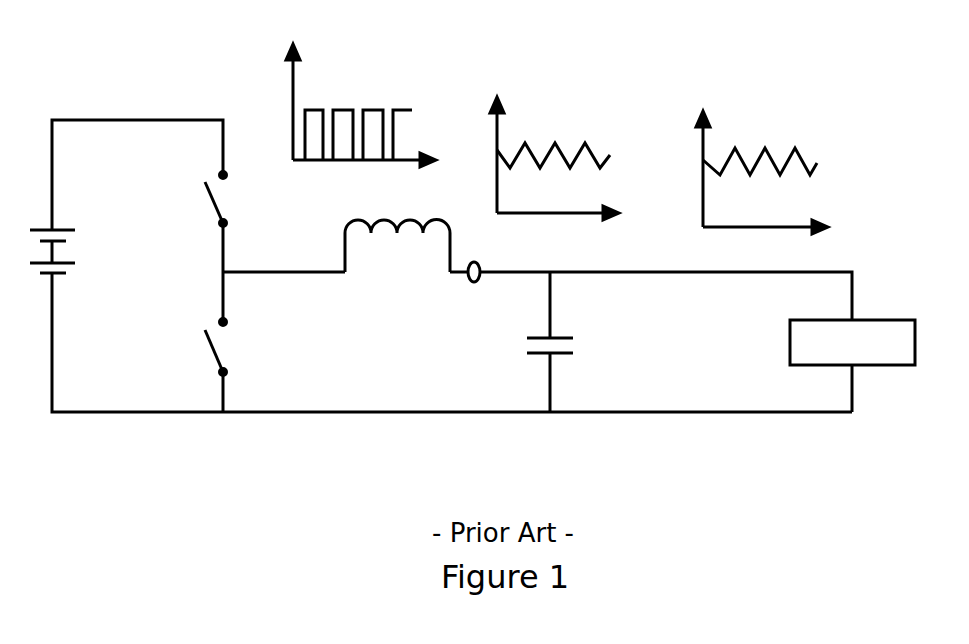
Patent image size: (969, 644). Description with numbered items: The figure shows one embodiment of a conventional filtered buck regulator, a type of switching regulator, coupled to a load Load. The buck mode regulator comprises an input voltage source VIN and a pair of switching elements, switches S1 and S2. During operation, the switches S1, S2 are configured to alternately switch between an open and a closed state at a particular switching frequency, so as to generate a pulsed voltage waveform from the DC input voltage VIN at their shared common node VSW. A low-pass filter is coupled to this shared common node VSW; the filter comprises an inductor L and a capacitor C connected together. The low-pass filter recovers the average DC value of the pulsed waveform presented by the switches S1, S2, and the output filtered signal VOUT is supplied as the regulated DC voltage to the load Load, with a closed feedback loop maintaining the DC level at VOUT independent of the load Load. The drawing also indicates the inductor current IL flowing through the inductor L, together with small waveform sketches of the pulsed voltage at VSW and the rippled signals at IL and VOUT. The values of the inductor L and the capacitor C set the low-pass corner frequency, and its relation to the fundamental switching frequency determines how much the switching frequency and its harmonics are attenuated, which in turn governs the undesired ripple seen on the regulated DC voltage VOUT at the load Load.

The input voltage source VIN is at (92, 184).
The switch S1 is at (231, 199).
The switch S2 is at (231, 347).
The shared common node VSW is at (290, 172).
The inductor L is at (397, 238).
The inductor current IL is at (497, 213).
The output filtered signal VOUT is at (703, 227).
The capacitor C is at (564, 348).
The load Load is at (852, 342).